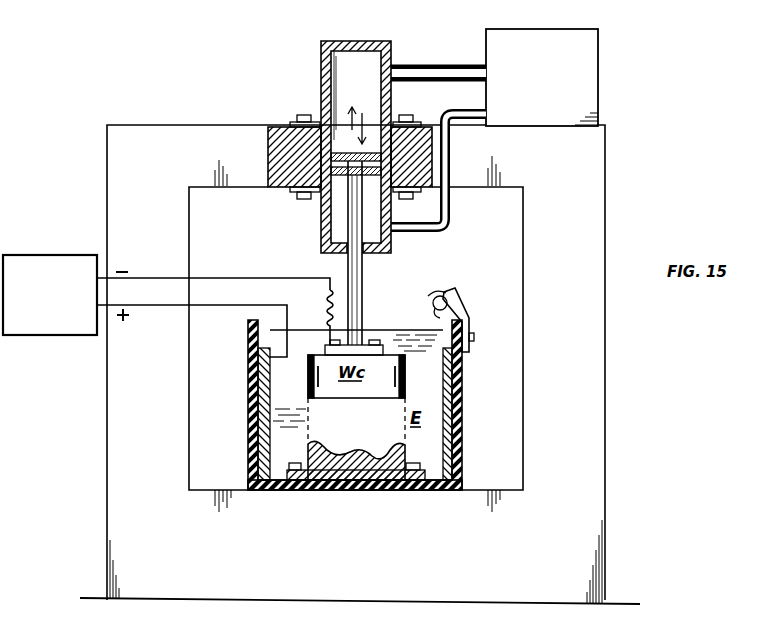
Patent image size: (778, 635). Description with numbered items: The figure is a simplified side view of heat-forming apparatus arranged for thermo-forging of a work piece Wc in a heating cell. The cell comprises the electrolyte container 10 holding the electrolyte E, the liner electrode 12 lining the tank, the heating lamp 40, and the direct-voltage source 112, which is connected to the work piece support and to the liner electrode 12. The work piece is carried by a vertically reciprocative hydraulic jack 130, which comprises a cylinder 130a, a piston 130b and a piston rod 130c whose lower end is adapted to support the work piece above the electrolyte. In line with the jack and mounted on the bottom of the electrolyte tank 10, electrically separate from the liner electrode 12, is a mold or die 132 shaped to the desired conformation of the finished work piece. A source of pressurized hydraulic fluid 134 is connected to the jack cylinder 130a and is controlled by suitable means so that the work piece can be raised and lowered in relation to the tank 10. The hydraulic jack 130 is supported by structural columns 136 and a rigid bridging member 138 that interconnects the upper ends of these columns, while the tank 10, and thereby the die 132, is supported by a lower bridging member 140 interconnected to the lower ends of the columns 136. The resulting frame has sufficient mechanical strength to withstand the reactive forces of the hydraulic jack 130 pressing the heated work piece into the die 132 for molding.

The electrolyte container 10 is at (462, 391).
The liner electrode 12 is at (440, 432).
The heating lamp 40 is at (459, 305).
The direct-voltage source 112 is at (33, 258).
The hydraulic jack 130 is at (312, 231).
The cylinder 130a is at (391, 96).
The piston 130b is at (343, 147).
The piston rod 130c is at (363, 279).
The mold or die 132 is at (385, 490).
The source of pressurized hydraulic fluid 134 is at (590, 69).
The structural columns 136 is at (107, 398).
The rigid bridging member 138 is at (237, 137).
The lower bridging member 140 is at (342, 575).